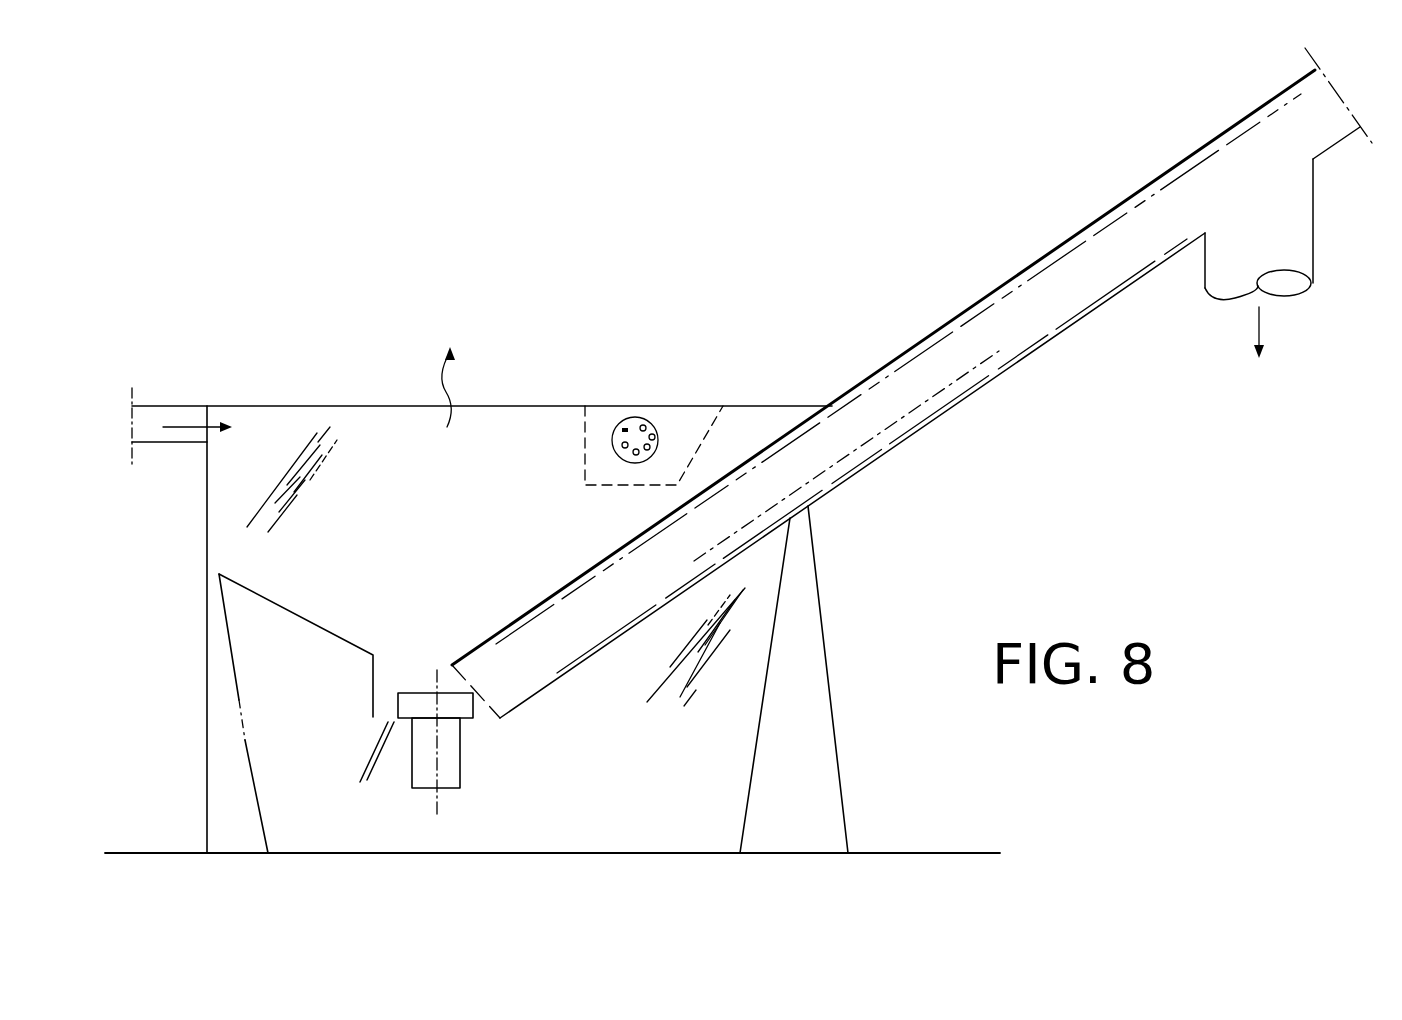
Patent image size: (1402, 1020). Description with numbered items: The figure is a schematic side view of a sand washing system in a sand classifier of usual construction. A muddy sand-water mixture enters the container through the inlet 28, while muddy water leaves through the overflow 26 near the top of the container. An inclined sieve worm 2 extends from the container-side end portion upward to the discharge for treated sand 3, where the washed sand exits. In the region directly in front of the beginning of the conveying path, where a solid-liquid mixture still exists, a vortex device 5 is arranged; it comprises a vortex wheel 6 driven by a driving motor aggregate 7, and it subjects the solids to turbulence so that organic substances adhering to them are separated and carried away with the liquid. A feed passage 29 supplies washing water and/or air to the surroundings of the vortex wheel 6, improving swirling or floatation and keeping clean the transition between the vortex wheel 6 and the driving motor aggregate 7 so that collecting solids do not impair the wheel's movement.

The sieve worm 2 is at (893, 380).
The discharge for treated sand 3 is at (1292, 250).
The vortex device 5 is at (499, 744).
The vortex wheel 6 is at (458, 705).
The driving motor aggregate 7 is at (448, 770).
The muddy water overflow 26 is at (639, 427).
The muddy sand-water mixture inlet 28 is at (170, 418).
The feed passage for washing water and/or air 29 is at (373, 745).